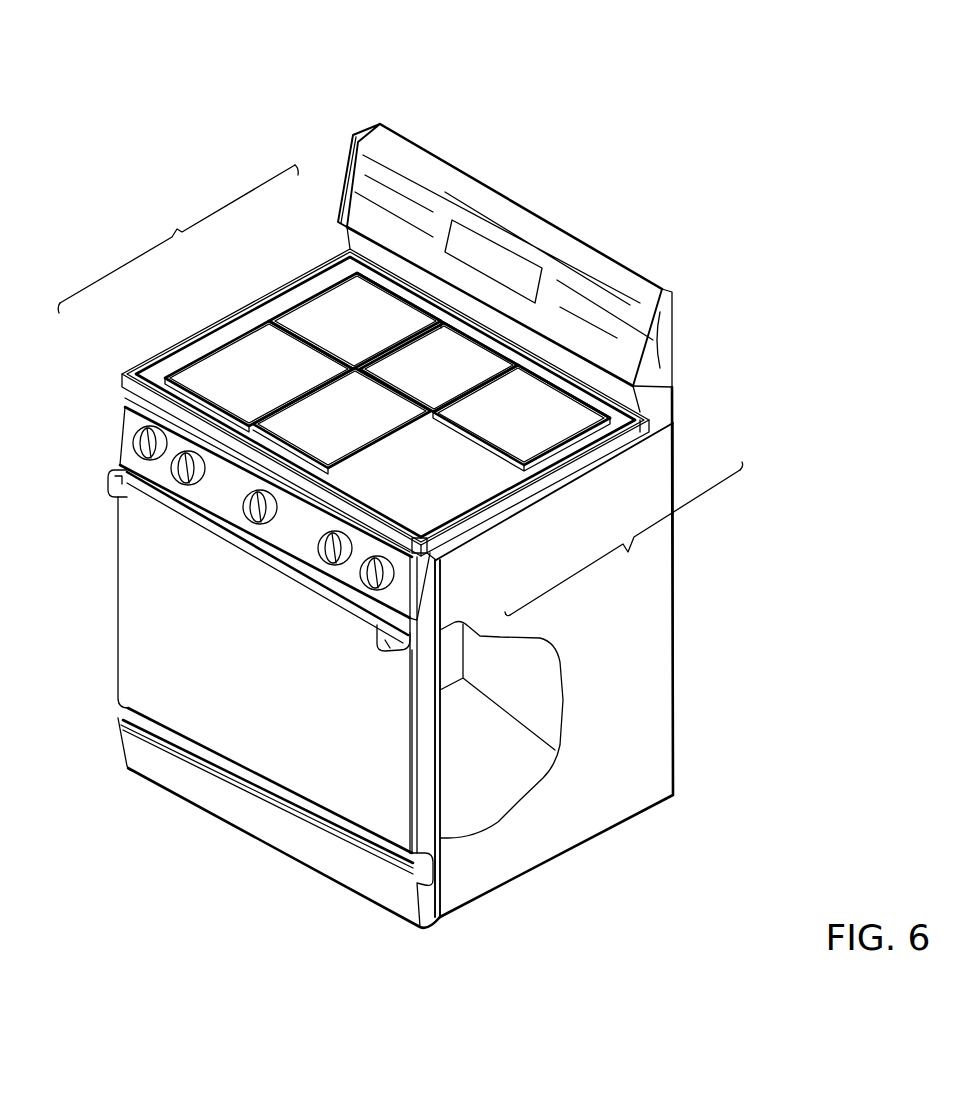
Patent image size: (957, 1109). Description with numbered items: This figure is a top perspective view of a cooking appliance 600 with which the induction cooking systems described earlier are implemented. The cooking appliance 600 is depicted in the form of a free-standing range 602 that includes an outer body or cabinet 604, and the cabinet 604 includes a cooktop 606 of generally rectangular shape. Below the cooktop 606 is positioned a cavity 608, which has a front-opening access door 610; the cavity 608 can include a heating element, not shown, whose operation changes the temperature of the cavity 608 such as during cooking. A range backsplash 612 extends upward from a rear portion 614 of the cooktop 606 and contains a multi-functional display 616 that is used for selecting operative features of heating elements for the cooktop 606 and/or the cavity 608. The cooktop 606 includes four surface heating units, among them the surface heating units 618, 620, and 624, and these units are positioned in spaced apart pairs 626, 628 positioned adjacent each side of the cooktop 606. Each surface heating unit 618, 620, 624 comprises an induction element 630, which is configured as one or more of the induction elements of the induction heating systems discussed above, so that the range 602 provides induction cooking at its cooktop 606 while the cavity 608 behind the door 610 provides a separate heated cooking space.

The cooking appliance 600 is at (678, 96).
The free-standing range 602 is at (612, 245).
The outer body or cabinet 604 is at (668, 697).
The cooktop 606 is at (462, 350).
The cavity 608 is at (511, 775).
The front-opening access door 610 is at (130, 652).
The range backsplash 612 is at (324, 135).
The rear portion 614 is at (378, 188).
The multi-functional display 616 is at (480, 250).
The surface heating unit 618 is at (495, 488).
The surface heating unit 620 is at (613, 427).
The surface heating unit 624 is at (318, 295).
The spaced apart pair 626 is at (178, 239).
The spaced apart pair 628 is at (624, 539).
The induction element 630 is at (285, 395).